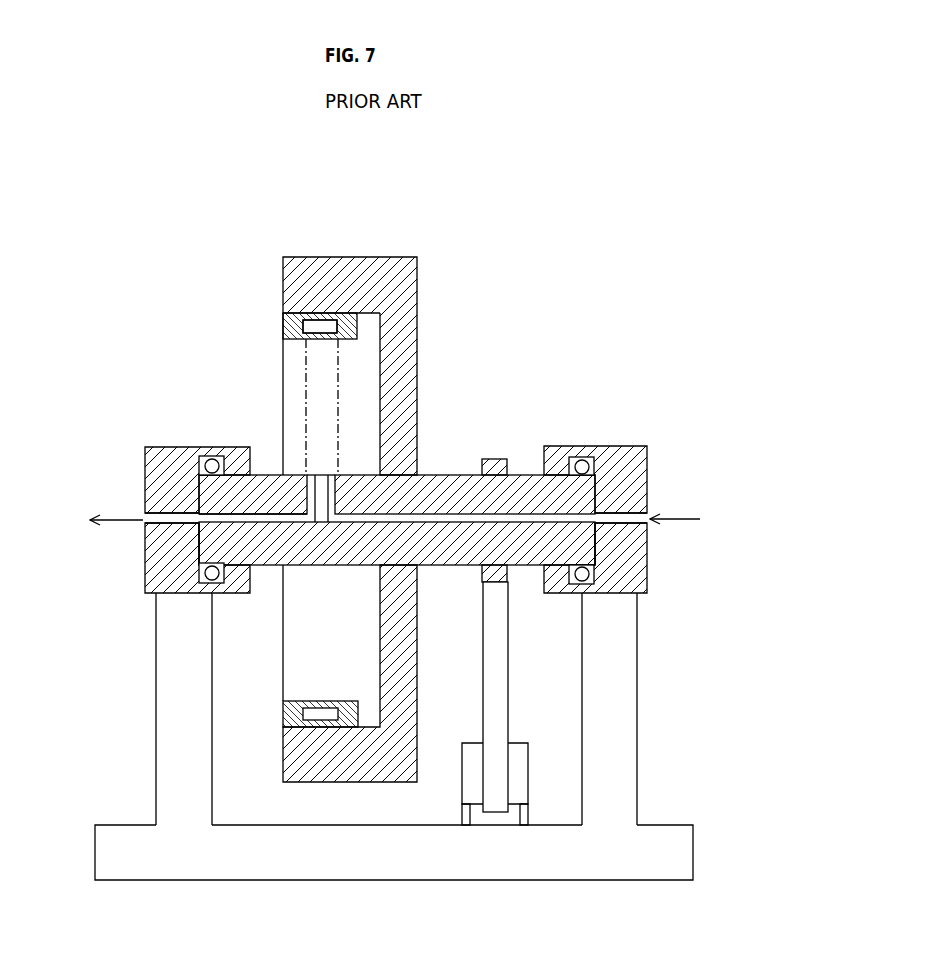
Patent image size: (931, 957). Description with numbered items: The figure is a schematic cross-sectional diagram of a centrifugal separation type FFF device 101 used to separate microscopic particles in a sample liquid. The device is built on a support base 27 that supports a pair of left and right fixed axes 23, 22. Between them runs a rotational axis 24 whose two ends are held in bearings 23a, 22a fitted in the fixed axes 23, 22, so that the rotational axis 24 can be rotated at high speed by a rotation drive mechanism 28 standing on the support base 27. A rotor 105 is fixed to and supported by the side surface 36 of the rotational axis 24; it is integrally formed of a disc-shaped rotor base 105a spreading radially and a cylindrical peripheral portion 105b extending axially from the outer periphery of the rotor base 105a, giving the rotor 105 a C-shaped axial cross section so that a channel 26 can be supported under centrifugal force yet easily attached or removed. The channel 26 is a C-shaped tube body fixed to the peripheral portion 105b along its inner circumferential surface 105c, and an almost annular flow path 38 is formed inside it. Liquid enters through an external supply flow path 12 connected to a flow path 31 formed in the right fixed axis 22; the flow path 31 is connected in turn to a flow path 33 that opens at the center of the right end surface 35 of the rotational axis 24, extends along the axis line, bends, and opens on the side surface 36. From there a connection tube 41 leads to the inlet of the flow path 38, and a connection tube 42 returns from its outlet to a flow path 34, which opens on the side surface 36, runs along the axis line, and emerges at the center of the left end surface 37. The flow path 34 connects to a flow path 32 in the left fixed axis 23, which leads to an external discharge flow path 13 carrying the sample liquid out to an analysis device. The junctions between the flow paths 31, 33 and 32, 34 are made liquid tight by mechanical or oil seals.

The centrifugal separation type FFF device 101 is at (645, 262).
The rotor 105 is at (520, 243).
The rotor base 105a is at (403, 350).
The peripheral portion 105b is at (370, 276).
The inner circumferential surface 105c is at (283, 318).
The channel 26 is at (286, 329).
The flow path 38 is at (322, 327).
The connection tube 42 is at (307, 402).
The connection tube 41 is at (338, 420).
The rotational axis 24 is at (428, 487).
The side surface 36 is at (273, 476).
The flow path 34 is at (277, 521).
The flow path 33 is at (413, 520).
The end surface 37 is at (197, 552).
The end surface 35 is at (598, 545).
The fixed axis 23 is at (172, 457).
The bearing 23a is at (211, 458).
The flow path 32 is at (167, 517).
The fixed axis 22 is at (635, 475).
The bearing 22a is at (586, 456).
The flow path 31 is at (635, 520).
The external discharge flow path 13 is at (100, 523).
The external supply flow path 12 is at (691, 521).
The rotation drive mechanism 28 is at (520, 773).
The support base 27 is at (668, 860).